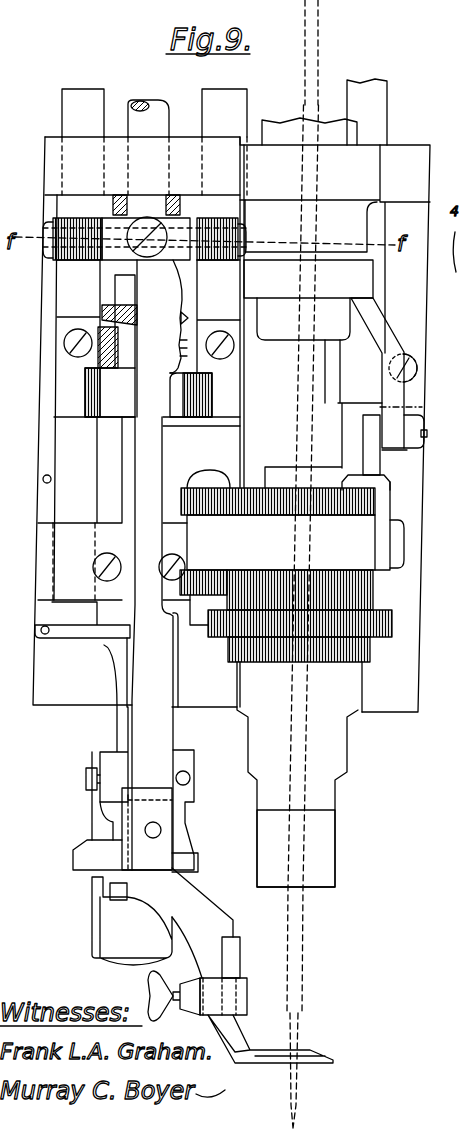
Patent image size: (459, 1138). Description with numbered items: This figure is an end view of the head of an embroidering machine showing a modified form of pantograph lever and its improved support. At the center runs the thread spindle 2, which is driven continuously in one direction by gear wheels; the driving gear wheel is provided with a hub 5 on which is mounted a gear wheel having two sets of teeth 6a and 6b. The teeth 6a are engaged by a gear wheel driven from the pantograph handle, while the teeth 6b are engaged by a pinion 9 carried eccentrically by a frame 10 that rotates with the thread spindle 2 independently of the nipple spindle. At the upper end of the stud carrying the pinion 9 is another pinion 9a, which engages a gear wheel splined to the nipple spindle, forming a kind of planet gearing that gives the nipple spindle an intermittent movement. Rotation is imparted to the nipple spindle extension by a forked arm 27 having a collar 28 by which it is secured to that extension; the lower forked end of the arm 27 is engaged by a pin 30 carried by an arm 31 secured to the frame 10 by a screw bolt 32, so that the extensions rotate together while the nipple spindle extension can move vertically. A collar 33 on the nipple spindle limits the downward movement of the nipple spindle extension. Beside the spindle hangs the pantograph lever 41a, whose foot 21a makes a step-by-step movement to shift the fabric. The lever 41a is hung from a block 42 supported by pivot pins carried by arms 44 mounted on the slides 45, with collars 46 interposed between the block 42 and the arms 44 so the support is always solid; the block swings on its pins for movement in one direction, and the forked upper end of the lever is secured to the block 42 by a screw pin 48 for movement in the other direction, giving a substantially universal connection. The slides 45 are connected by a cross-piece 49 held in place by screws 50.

The thread spindle 2 is at (296, 848).
The hub 5 is at (372, 656).
The teeth 6a is at (309, 623).
The teeth 6b is at (374, 592).
The pinion 9 is at (214, 572).
The pinion 9a is at (186, 492).
The frame 10 is at (288, 526).
The foot 21a is at (316, 1062).
The forked arm 27 is at (386, 374).
The collar 28 is at (308, 279).
The pin 30 is at (409, 449).
The arm 31 is at (364, 440).
The screw bolt 32 is at (403, 547).
The collar 33 is at (303, 319).
The pantograph lever 41a is at (172, 603).
The block 42 is at (135, 237).
The arms 44 is at (144, 239).
The slides 45 is at (148, 380).
The collars 46 is at (103, 221).
The screw pin 48 is at (151, 258).
The cross-piece 49 is at (111, 346).
The screws 50 is at (81, 357).